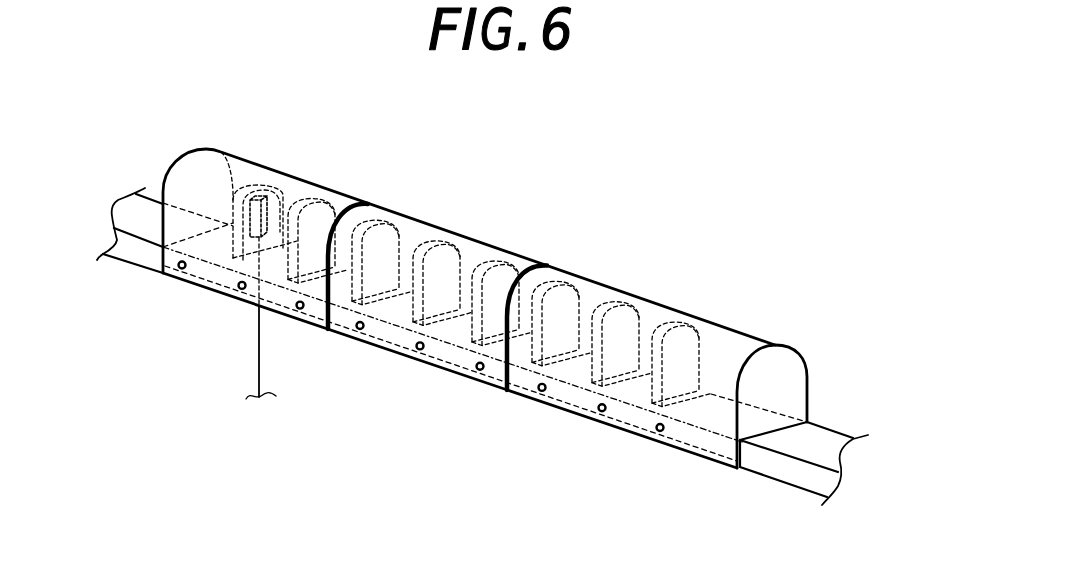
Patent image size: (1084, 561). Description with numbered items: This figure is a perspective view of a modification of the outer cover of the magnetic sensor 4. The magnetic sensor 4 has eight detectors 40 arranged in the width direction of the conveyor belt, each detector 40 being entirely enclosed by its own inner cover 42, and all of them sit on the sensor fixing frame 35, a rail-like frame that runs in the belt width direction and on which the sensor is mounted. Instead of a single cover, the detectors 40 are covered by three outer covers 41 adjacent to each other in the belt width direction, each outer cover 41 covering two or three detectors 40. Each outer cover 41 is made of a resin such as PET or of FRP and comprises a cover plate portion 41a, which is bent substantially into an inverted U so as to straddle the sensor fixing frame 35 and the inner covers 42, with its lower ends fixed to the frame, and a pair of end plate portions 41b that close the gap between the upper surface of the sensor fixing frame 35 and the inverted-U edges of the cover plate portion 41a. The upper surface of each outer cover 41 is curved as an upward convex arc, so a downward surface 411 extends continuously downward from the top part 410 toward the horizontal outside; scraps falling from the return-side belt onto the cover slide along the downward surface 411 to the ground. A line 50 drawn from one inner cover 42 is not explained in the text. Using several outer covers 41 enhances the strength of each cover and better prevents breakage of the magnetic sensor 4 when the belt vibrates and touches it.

The magnetic sensor 4 is at (510, 231).
The sensor fixing frame 35 is at (793, 472).
The detector 40 is at (287, 205).
The outer cover 41 is at (330, 188).
The cover plate portion 41a is at (703, 318).
The end plate portion 41b is at (402, 230).
The inner cover 42 is at (256, 198).
The cable 50 is at (260, 353).
The top part 410 is at (627, 300).
The downward surface 411 is at (732, 363).